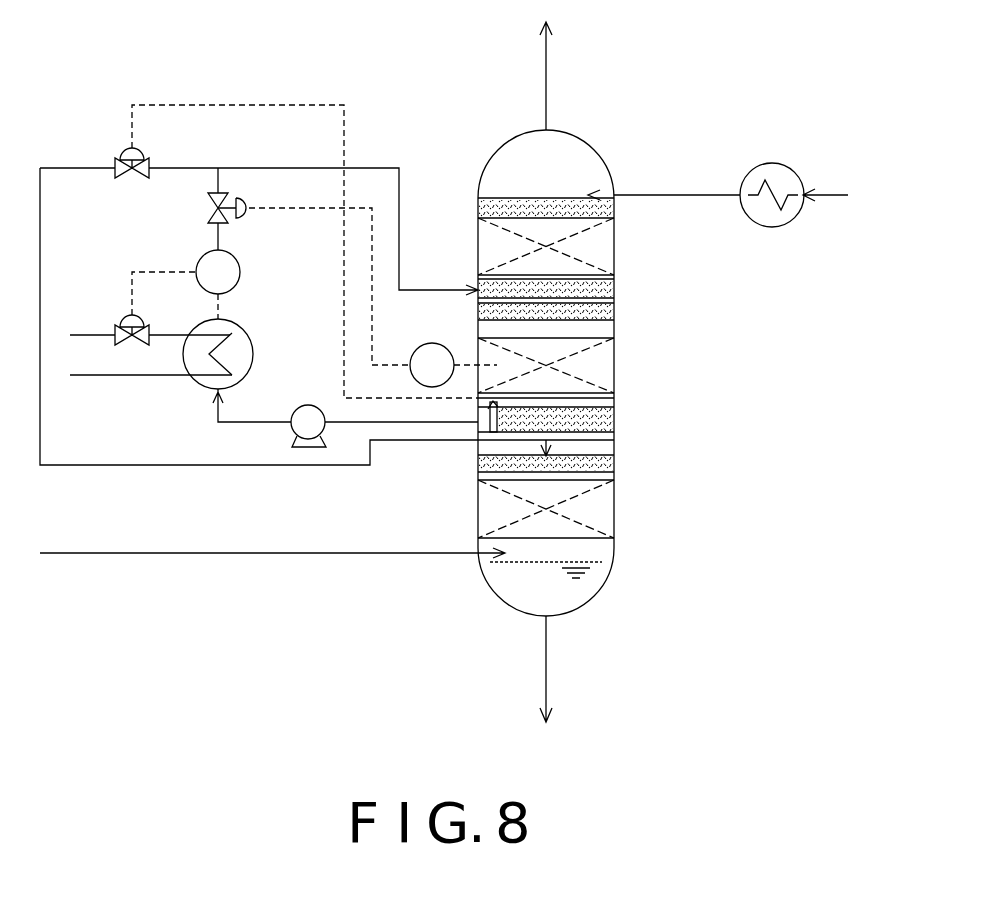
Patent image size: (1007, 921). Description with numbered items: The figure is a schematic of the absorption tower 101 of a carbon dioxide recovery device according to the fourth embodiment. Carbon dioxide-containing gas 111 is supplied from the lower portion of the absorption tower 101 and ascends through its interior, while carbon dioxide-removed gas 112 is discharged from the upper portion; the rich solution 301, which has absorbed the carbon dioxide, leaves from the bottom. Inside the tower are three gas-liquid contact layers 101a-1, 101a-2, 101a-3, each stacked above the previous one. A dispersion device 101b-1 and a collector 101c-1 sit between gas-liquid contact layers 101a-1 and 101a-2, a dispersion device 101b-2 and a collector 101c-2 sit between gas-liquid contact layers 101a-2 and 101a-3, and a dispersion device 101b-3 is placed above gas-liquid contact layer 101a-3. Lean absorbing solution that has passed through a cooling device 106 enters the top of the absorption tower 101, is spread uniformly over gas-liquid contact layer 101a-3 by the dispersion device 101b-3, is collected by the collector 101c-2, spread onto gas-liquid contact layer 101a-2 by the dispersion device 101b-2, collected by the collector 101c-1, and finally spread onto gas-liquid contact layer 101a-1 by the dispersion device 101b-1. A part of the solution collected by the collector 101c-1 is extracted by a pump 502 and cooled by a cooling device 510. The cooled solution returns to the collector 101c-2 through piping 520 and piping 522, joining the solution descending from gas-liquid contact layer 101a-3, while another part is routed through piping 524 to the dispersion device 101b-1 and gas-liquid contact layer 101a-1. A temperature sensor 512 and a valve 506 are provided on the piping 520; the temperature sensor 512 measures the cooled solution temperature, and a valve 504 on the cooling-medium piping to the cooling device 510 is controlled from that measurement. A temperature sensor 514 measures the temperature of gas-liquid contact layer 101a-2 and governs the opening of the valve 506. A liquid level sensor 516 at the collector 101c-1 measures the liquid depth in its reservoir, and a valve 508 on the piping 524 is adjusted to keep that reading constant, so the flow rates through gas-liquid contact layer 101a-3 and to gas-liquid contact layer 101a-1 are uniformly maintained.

The absorption tower 101 is at (583, 142).
The gas-liquid contact layer 101a-1 is at (595, 520).
The gas-liquid contact layer 101a-2 is at (595, 368).
The gas-liquid contact layer 101a-3 is at (598, 252).
The dispersion device 101b-1 is at (605, 465).
The dispersion device 101b-2 is at (615, 308).
The dispersion device 101b-3 is at (620, 200).
The collector 101c-1 is at (600, 421).
The collector 101c-2 is at (612, 291).
The cooling device 106 is at (772, 163).
The carbon dioxide-containing gas 111 is at (375, 556).
The carbon dioxide-removed gas 112 is at (548, 52).
The rich solution 301 is at (542, 678).
The pump 502 is at (302, 403).
The valve 504 is at (112, 330).
The valve 506 is at (232, 232).
The valve 508 is at (113, 163).
The cooling device 510 is at (198, 392).
The temperature sensor 512 is at (242, 274).
The temperature sensor 514 is at (413, 343).
The liquid level sensor 516 is at (498, 405).
The piping 520 is at (208, 184).
The piping 522 is at (430, 286).
The piping 524 is at (183, 165).